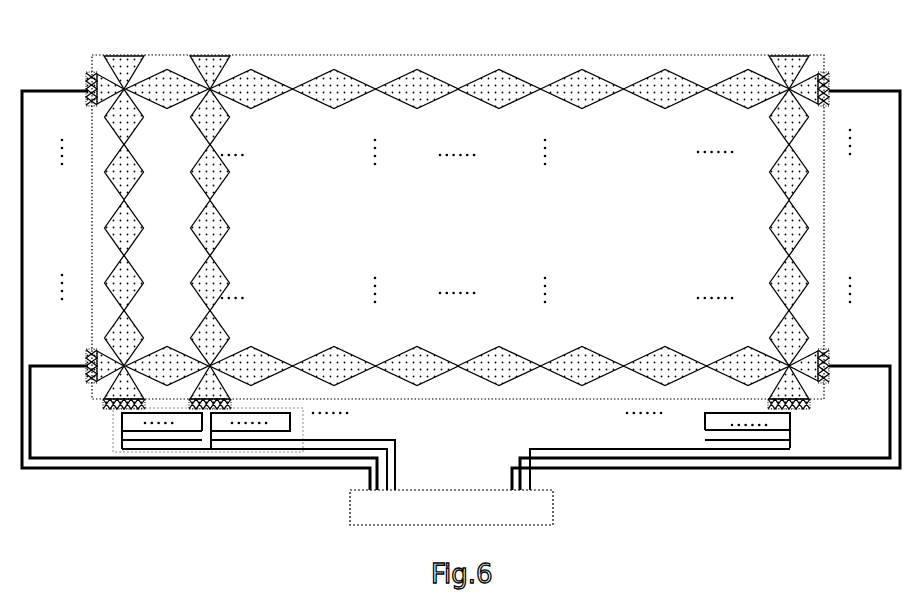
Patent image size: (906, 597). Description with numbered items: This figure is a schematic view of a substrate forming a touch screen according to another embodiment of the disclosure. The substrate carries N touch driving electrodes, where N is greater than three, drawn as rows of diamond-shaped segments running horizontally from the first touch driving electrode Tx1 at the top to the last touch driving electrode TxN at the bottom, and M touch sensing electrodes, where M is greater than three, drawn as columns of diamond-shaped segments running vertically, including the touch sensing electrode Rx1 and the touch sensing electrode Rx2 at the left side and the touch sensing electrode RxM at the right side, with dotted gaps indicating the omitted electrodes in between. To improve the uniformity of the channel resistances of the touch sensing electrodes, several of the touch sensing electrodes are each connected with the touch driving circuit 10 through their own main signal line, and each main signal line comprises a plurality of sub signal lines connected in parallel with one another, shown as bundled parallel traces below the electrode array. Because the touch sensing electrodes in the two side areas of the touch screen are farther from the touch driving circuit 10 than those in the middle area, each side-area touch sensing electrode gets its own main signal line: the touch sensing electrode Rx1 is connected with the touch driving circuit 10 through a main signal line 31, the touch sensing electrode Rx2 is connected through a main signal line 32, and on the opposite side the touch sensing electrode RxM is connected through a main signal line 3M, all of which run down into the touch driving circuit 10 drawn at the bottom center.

The touch driving electrode Tx1 is at (167, 80).
The touch driving electrode TxN is at (248, 368).
The touch sensing electrode Rx1 is at (124, 285).
The touch sensing electrode Rx2 is at (210, 225).
The touch sensing electrode RxM is at (785, 288).
The main signal line 31 is at (290, 449).
The main signal line 32 is at (377, 440).
The main signal line 3M is at (545, 448).
The touch driving circuit 10 is at (553, 508).